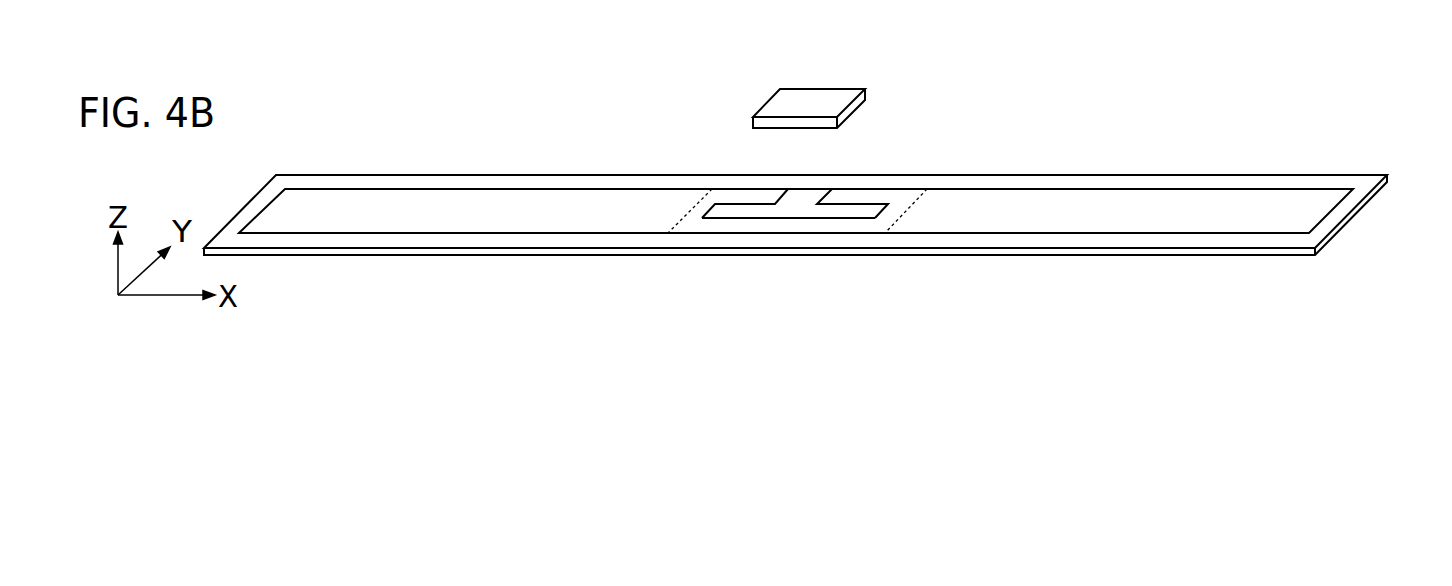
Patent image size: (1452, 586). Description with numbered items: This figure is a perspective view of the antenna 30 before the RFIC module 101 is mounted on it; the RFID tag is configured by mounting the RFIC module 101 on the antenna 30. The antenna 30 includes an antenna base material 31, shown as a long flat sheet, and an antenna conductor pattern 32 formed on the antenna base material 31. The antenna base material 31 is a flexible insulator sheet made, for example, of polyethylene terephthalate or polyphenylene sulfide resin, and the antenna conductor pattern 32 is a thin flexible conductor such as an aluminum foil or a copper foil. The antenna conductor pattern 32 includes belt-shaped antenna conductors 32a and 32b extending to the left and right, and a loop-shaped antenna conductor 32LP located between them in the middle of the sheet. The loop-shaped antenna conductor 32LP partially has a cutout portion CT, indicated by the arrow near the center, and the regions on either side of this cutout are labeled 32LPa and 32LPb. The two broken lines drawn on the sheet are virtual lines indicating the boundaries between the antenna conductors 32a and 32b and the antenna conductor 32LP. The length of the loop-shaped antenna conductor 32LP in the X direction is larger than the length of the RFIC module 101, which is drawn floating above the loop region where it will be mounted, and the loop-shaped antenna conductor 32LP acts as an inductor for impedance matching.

The antenna 30 is at (356, 128).
The antenna base material 31 is at (278, 184).
The antenna conductor pattern 32 is at (897, 343).
The antenna conductor 32a is at (633, 220).
The antenna conductor 32b is at (977, 218).
The loop-shaped antenna conductor 32LP is at (787, 225).
The first land 32LPa is at (752, 194).
The second land 32LPb is at (867, 193).
The cutout portion CT is at (818, 181).
The RFIC module 101 is at (817, 98).